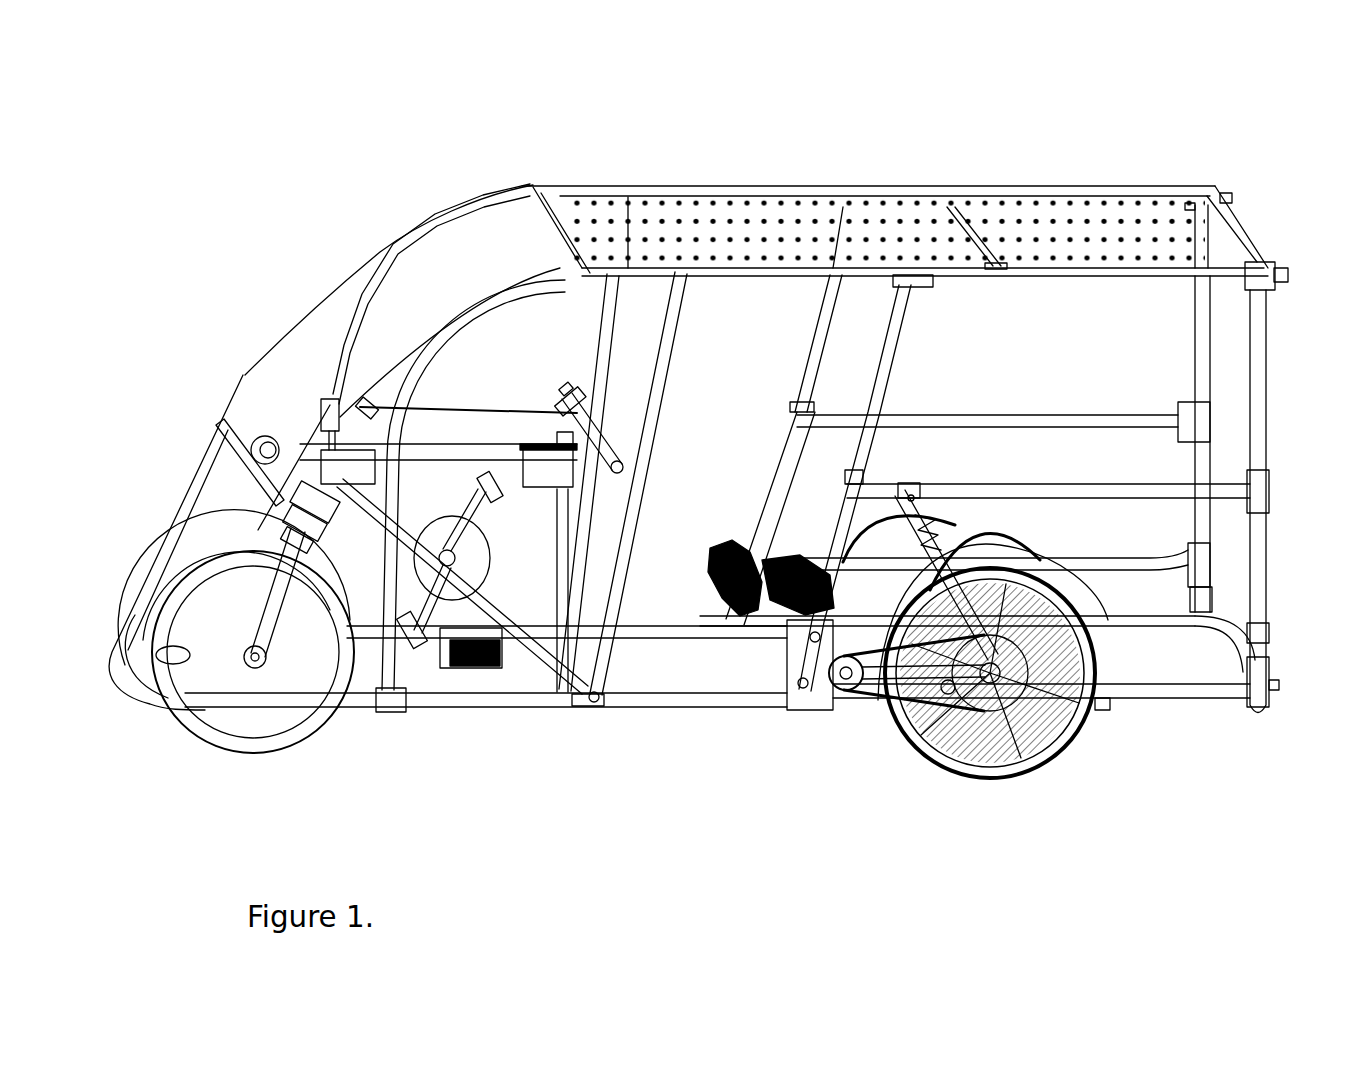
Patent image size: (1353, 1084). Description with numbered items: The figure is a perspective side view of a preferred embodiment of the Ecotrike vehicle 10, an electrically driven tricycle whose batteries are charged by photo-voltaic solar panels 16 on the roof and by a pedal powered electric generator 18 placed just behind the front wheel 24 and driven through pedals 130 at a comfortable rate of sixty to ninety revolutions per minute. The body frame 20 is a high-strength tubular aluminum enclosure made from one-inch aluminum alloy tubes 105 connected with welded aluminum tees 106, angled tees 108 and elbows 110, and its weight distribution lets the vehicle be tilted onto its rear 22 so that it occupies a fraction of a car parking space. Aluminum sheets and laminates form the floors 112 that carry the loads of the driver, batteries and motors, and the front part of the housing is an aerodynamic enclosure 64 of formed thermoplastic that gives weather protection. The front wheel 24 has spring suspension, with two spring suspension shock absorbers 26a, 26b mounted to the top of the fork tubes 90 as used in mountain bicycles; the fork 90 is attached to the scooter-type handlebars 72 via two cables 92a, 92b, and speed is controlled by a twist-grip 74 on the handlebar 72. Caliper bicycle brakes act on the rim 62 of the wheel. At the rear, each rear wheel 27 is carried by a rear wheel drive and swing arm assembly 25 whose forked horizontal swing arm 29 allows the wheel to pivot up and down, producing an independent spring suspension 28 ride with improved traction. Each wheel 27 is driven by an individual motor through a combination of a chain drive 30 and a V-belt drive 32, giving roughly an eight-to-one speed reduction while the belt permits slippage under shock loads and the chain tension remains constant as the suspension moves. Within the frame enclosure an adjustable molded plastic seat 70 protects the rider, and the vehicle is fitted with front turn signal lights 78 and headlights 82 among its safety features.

The vehicle 10 is at (770, 168).
The photo-voltaic solar panels 16 is at (935, 215).
The elbows 110 is at (1262, 268).
The frame 20 is at (1265, 360).
The rear 22 is at (1278, 410).
The tubes 105 is at (1195, 385).
The tees 106 is at (1262, 490).
The angled tees 108 is at (1262, 640).
The independent spring suspension 28 is at (895, 435).
The rear wheel 27 is at (1052, 755).
The swing arm 29 is at (935, 725).
The chain drive 30 is at (892, 722).
The rear wheel drive and swing arm assembly 25 is at (812, 728).
The V-belt drive 32 is at (858, 716).
The floors 112 is at (684, 660).
The seat 70 is at (730, 573).
The cable 92a is at (458, 398).
The cable 92b is at (470, 440).
The handlebars 72 is at (580, 405).
The twist-grip 74 is at (620, 458).
The headlights 82 is at (262, 438).
The aerodynamic enclosure 64 is at (207, 490).
The spring suspension shock absorber 26b is at (300, 532).
The spring suspension shock absorber 26a is at (312, 556).
The fork tubes 90 is at (275, 597).
The front turn signal lights 78 is at (168, 662).
The rim 62 is at (243, 750).
The front wheel 24 is at (265, 712).
The pedals 130 is at (405, 632).
The pedal powered electric generator 18 is at (477, 664).